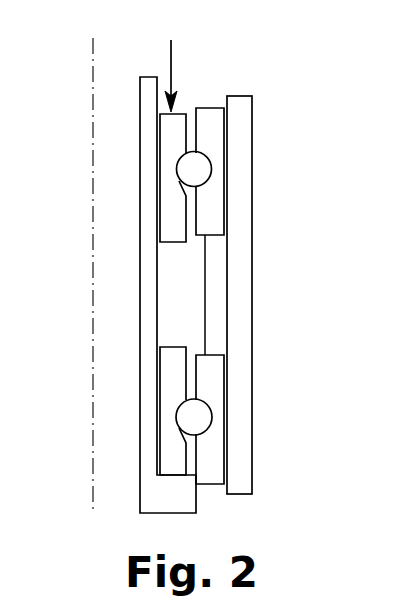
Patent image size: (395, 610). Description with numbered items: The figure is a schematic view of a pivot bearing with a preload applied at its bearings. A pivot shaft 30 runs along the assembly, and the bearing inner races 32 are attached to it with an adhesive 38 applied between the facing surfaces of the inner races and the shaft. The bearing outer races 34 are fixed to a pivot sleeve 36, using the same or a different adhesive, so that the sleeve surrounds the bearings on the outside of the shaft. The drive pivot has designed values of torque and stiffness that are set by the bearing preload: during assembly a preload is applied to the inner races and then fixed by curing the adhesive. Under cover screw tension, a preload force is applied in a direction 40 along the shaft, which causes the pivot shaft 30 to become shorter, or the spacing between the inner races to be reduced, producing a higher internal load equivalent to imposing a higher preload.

The pivot shaft 30 is at (150, 146).
The direction of preload force 40 is at (171, 51).
The bearing inner races 32 is at (170, 158).
The bearing outer races 34 is at (212, 210).
The pivot sleeve 36 is at (226, 287).
The adhesive 38 is at (163, 433).